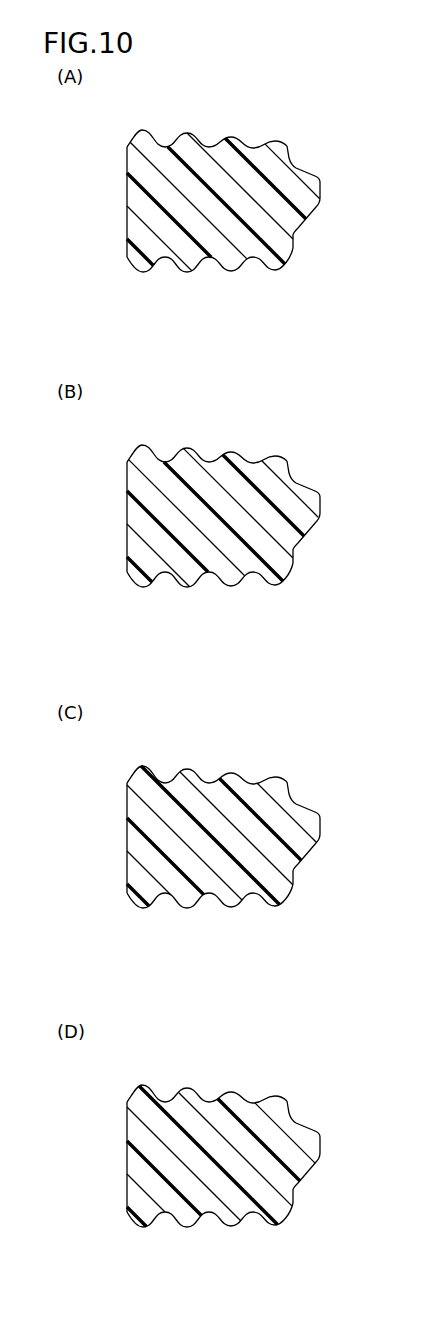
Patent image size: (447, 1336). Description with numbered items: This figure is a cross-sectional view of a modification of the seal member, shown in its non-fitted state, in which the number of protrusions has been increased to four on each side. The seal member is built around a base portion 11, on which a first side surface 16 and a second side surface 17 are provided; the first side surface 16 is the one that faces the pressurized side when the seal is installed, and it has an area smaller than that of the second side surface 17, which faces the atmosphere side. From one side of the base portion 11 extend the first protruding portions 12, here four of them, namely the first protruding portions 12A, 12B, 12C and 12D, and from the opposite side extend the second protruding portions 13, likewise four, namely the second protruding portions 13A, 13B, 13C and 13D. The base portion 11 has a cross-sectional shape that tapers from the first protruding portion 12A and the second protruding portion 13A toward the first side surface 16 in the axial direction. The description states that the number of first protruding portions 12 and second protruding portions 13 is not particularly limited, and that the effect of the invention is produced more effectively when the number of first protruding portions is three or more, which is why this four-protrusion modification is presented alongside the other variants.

The base portion 11 is at (270, 218).
The first protruding portions 12 is at (210, 584).
The first protruding portion 12A is at (275, 140).
The first protruding portion 12B is at (230, 136).
The first protruding portion 12C is at (188, 132).
The first protruding portion 12D is at (142, 129).
The second protruding portions 13 is at (209, 770).
The second protruding portion 13A is at (275, 271).
The second protruding portion 13B is at (231, 273).
The second protruding portion 13C is at (187, 273).
The second protruding portion 13D is at (143, 273).
The first side surface 16 is at (321, 202).
The second side surface 17 is at (127, 203).